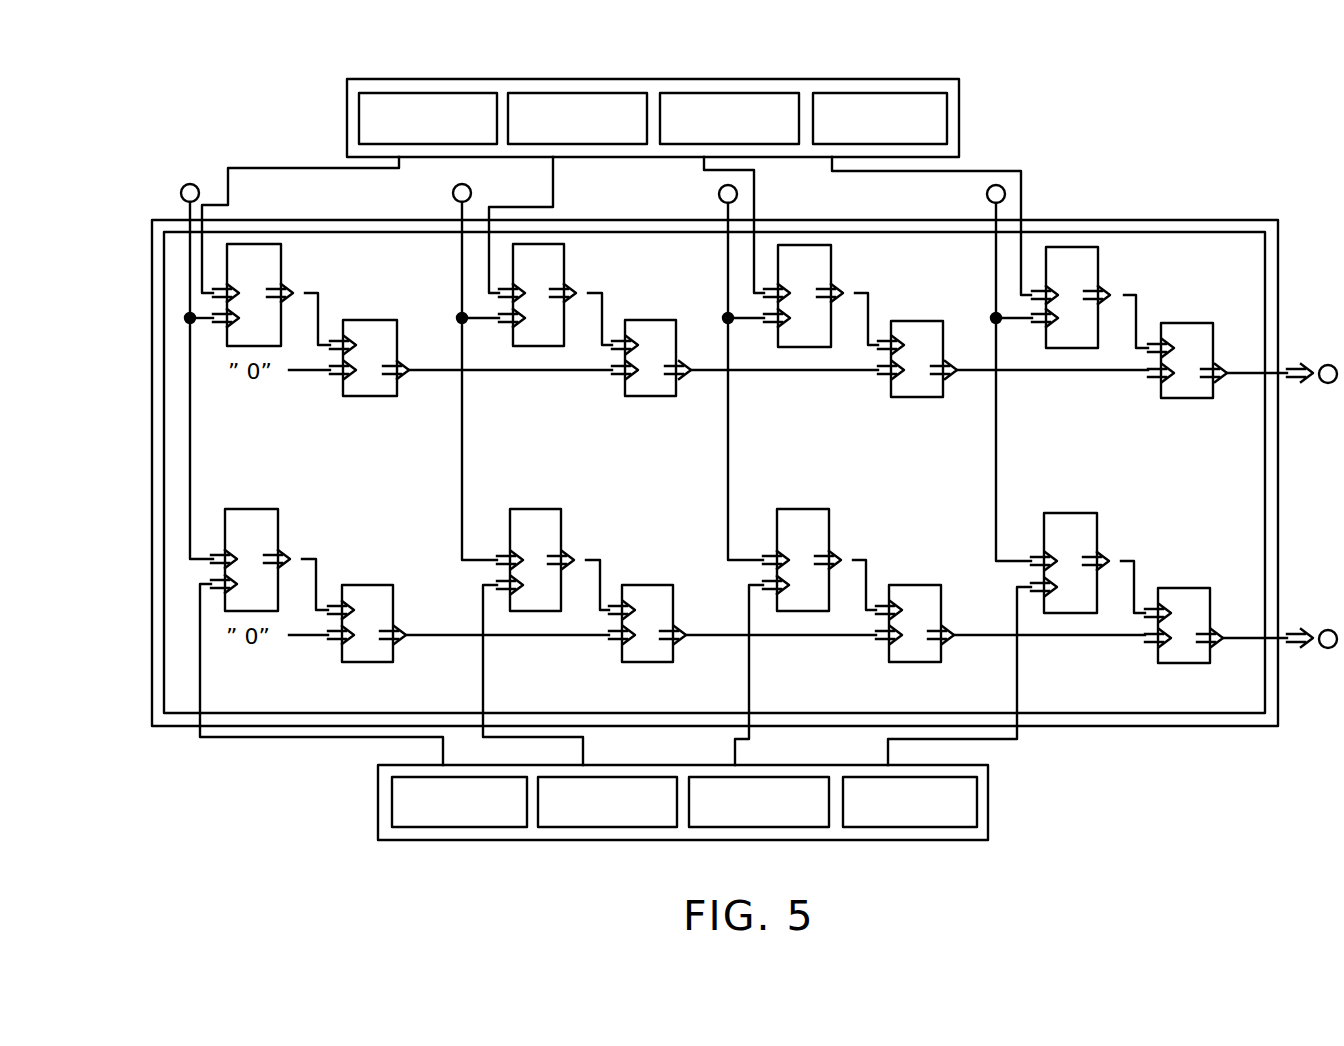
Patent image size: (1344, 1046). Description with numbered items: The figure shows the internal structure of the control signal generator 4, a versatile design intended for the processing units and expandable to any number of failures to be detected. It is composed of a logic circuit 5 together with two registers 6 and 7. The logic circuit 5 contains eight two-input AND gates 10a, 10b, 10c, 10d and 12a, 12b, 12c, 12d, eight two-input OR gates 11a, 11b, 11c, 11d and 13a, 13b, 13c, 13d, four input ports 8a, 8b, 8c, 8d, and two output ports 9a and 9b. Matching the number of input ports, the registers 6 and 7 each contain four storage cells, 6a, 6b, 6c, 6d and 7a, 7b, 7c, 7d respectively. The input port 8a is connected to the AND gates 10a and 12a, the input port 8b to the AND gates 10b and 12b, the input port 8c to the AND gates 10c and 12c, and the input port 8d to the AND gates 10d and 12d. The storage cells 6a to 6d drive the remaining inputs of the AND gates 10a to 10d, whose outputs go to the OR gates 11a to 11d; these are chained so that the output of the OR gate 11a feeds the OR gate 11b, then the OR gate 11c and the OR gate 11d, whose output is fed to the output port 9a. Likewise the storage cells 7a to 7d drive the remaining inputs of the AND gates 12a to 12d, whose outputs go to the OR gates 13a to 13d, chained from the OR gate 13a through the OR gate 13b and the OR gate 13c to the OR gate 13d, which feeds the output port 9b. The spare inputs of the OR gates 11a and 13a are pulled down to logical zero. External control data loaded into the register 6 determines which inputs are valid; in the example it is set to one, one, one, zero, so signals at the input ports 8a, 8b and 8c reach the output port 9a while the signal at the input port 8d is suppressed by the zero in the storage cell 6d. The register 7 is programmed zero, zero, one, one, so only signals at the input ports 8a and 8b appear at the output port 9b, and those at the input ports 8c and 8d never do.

The control signal generator 4 is at (1280, 85).
The logic circuit 5 is at (1162, 220).
The register 6 is at (959, 107).
The storage cell 6a is at (436, 93).
The storage cell 6b is at (590, 93).
The storage cell 6c is at (728, 93).
The storage cell 6d is at (852, 93).
The register 7 is at (988, 800).
The storage cell 7a is at (462, 827).
The storage cell 7b is at (600, 827).
The storage cell 7c is at (753, 827).
The storage cell 7d is at (898, 827).
The input port 8a is at (184, 183).
The input port 8b is at (452, 193).
The input port 8c is at (718, 193).
The input port 8d is at (986, 193).
The output port 9a is at (1328, 383).
The output port 9b is at (1328, 648).
The AND gate 10a is at (281, 262).
The AND gate 10b is at (564, 262).
The AND gate 10c is at (831, 262).
The AND gate 10d is at (1098, 262).
The OR gate 11a is at (373, 396).
The OR gate 11b is at (648, 396).
The OR gate 11c is at (915, 397).
The OR gate 11d is at (1183, 398).
The AND gate 12a is at (278, 535).
The AND gate 12b is at (561, 535).
The AND gate 12c is at (829, 535).
The AND gate 12d is at (1097, 535).
The OR gate 13a is at (362, 662).
The OR gate 13b is at (640, 663).
The OR gate 13c is at (905, 663).
The OR gate 13d is at (1180, 663).